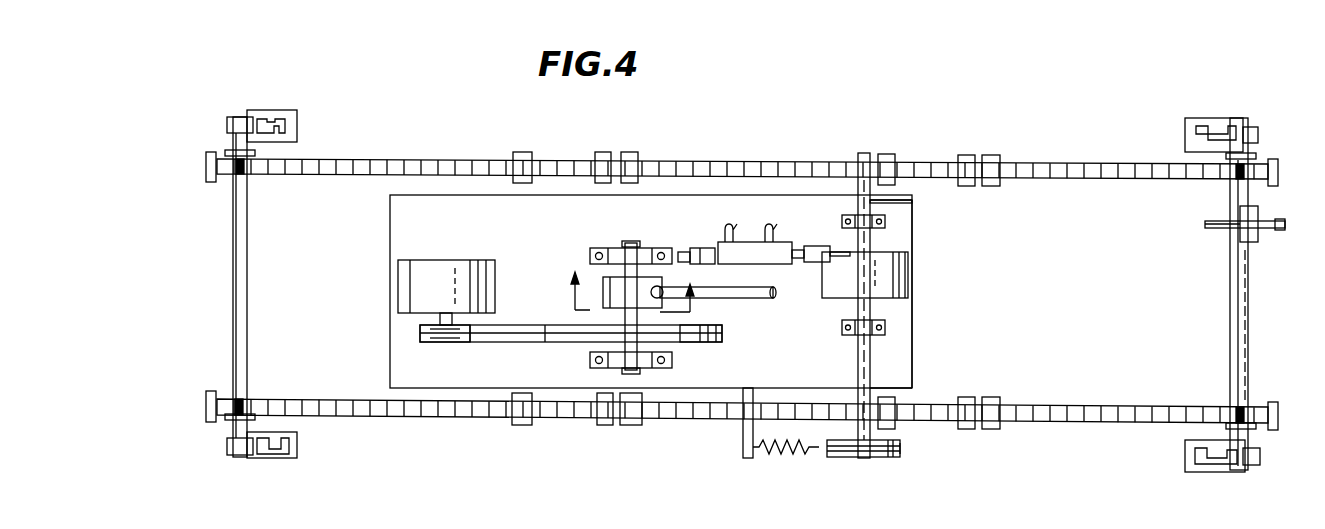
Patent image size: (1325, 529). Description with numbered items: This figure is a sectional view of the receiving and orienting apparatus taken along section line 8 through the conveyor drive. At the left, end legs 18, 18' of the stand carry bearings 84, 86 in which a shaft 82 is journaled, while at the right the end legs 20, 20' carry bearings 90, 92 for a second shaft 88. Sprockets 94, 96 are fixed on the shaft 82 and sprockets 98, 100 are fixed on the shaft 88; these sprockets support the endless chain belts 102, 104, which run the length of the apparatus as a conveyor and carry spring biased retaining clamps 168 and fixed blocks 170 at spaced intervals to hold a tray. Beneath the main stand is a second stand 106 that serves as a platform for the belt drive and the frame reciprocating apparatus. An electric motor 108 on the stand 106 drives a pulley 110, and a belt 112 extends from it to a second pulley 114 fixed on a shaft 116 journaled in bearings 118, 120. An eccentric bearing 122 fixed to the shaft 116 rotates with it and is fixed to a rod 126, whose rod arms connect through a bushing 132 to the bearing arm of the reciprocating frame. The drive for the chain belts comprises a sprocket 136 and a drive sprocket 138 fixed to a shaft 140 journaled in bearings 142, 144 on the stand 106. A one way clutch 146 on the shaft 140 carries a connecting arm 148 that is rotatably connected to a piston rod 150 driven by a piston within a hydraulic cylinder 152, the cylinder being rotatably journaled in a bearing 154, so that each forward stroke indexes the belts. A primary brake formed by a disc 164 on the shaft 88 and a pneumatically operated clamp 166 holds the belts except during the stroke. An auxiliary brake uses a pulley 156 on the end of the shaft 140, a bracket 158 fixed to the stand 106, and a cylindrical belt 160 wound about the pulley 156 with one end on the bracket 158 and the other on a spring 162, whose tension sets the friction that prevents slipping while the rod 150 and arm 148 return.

The section line 8- 8 is at (629, 301).
The end leg 18 is at (288, 466).
The end leg 18' is at (273, 102).
The end leg 20 is at (1215, 478).
The end leg 20' is at (1205, 118).
The shaft 82 is at (248, 276).
The bearing 84 is at (226, 452).
The bearing 86 is at (232, 120).
The second shaft 88 is at (1248, 291).
The bearing 90 is at (1260, 458).
The bearing 92 is at (1268, 122).
The sprocket 94 is at (232, 400).
The sprocket 96 is at (236, 173).
The sprocket 98 is at (1252, 406).
The sprocket 100 is at (1230, 176).
The endless chain belt 102 is at (420, 409).
The endless chain belt 104 is at (380, 163).
The second stand 106 is at (538, 226).
The electric motor 108 is at (410, 264).
The pulley 110 is at (456, 344).
The belt 112 is at (511, 340).
The second pulley 114 is at (718, 340).
The shaft 116 is at (636, 262).
The bearing 118 is at (652, 368).
The bearing 120 is at (614, 250).
The eccentric bearing 122 is at (596, 284).
The rod 126 is at (770, 294).
The bushing 132 is at (465, 528).
The sprocket 136 is at (892, 388).
The drive sprocket 138 is at (858, 154).
The shaft 140 is at (872, 205).
The bearing 142 is at (886, 328).
The bearing 144 is at (886, 227).
The one way clutch 146 is at (908, 274).
The connecting arm 148 is at (836, 258).
The piston rod 150 is at (814, 252).
The hydraulic cylinder 152 is at (730, 242).
The bearing 154 is at (700, 264).
The pulley 156 is at (892, 460).
The bracket 158 is at (742, 430).
The belt 160 is at (902, 446).
The spring 162 is at (786, 454).
The disc 164 is at (1284, 228).
The pneumatically operated clamp 166 is at (1232, 216).
The spring biased retaining clamp 168 is at (992, 155).
The fixed block 170 is at (968, 155).